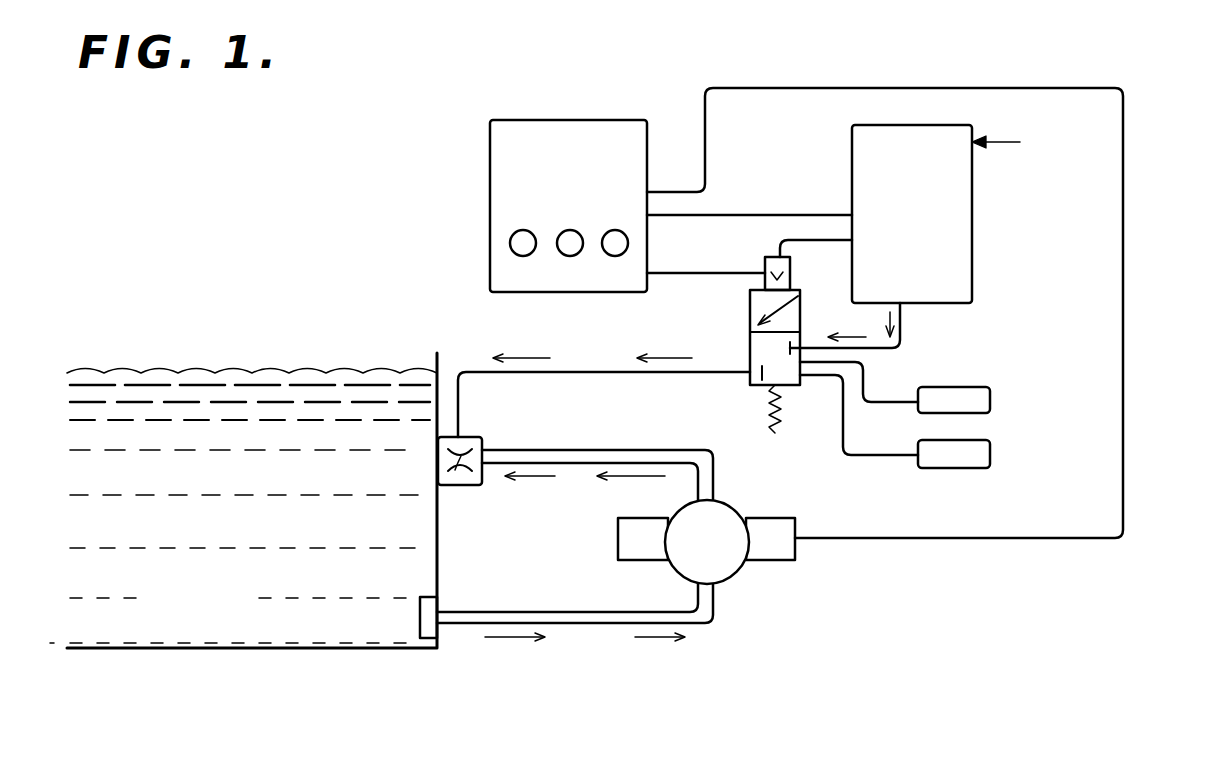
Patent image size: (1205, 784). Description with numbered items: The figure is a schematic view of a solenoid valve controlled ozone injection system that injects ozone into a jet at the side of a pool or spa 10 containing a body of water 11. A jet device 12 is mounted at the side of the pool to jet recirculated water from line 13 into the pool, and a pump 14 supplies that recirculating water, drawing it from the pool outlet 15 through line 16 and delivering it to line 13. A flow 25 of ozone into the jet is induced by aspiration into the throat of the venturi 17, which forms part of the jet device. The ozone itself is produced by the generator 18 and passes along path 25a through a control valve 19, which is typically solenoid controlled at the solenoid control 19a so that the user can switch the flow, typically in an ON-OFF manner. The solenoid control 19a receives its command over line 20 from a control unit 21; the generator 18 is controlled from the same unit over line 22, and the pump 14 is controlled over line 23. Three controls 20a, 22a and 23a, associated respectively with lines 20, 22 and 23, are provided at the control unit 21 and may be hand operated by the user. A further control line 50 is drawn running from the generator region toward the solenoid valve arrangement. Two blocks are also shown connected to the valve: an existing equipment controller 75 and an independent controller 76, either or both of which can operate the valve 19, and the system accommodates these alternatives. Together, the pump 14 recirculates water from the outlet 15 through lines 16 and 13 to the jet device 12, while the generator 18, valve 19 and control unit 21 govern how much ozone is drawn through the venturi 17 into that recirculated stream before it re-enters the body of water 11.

The pool or spa 10 is at (170, 655).
The body of water 11 is at (242, 592).
The jet device 12 is at (470, 487).
The line 13 is at (582, 464).
The pump 14 is at (740, 570).
The pool outlet 15 is at (420, 625).
The line 16 is at (594, 624).
The venturi 17 is at (455, 470).
The generator 18 is at (972, 258).
The control valve 19 is at (745, 388).
The solenoid control 19a is at (757, 284).
The line 20 is at (708, 272).
The control 20a is at (512, 235).
The control unit 21 is at (520, 108).
The line 22 is at (775, 215).
The control 22a is at (558, 258).
The line 23 is at (1123, 440).
The control 23a is at (612, 258).
The flow of ozone 25 is at (547, 375).
The ozone flow path 25a is at (890, 346).
The control line 50 is at (828, 240).
The existing equipment controller 75 is at (990, 398).
The independent controller 76 is at (970, 456).